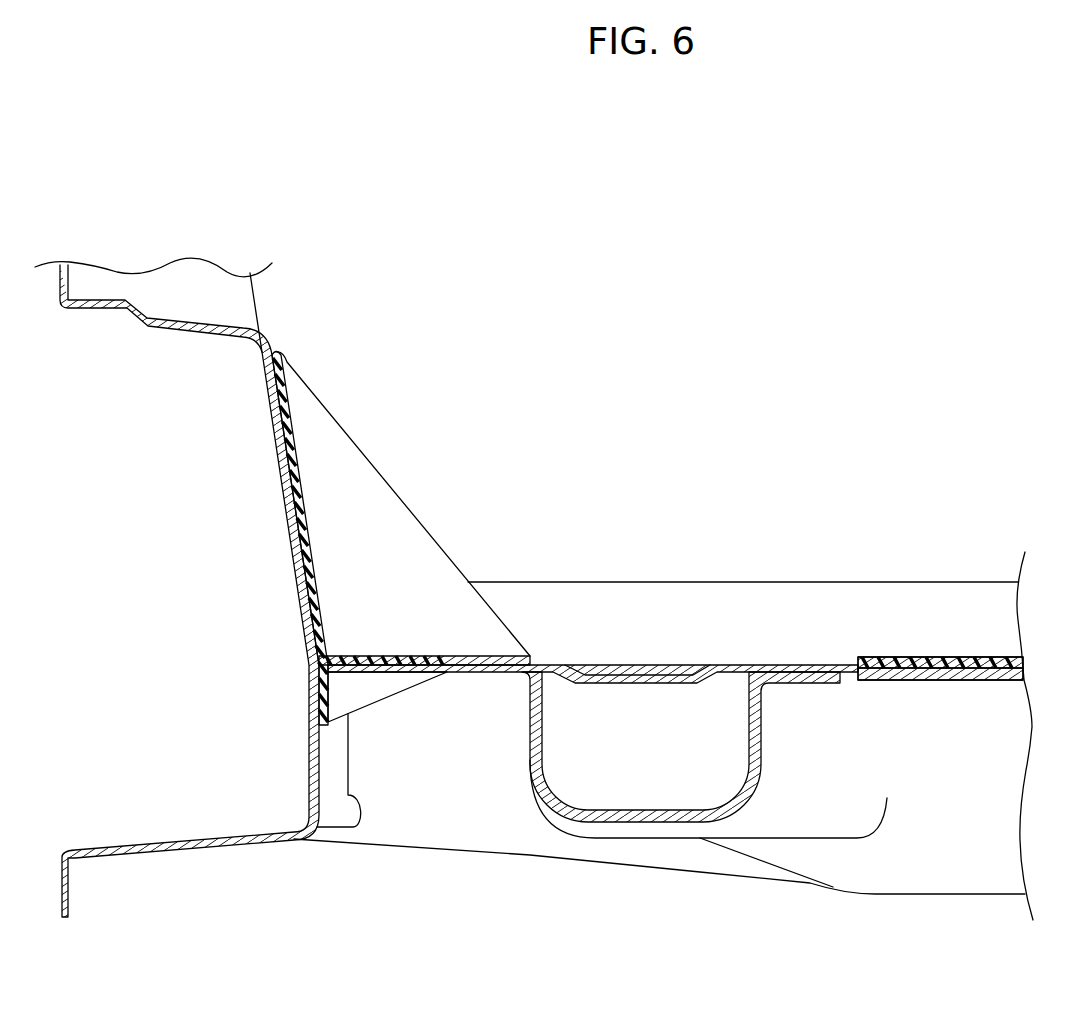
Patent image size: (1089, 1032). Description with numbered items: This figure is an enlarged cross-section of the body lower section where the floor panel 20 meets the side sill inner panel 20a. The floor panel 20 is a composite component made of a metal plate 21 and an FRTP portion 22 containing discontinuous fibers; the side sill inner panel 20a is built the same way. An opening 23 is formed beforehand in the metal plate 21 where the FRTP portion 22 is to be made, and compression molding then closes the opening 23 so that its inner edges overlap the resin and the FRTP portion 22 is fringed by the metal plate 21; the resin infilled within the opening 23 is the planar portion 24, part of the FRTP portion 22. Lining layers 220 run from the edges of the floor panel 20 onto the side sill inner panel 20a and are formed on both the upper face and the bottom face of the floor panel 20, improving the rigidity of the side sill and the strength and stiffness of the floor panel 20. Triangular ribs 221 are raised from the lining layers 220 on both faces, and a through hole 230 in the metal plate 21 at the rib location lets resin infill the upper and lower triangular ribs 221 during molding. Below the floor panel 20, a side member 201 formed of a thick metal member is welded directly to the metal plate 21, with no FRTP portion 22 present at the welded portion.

The floor panel 20 is at (572, 248).
The side sill inner panel 20a is at (168, 843).
The metal plate 21 is at (652, 664).
The FRTP portion 22 is at (897, 658).
The opening 23 is at (987, 683).
The planar portion 24 is at (960, 657).
The side member 201 is at (762, 753).
The lining layer 220 is at (284, 360).
The triangular rib 221 is at (377, 495).
The through hole 230 is at (418, 657).